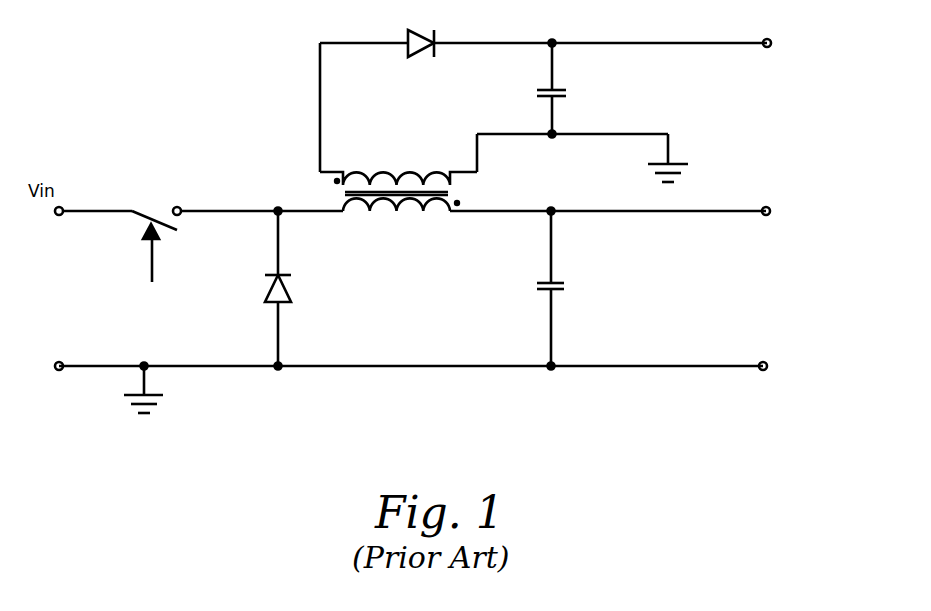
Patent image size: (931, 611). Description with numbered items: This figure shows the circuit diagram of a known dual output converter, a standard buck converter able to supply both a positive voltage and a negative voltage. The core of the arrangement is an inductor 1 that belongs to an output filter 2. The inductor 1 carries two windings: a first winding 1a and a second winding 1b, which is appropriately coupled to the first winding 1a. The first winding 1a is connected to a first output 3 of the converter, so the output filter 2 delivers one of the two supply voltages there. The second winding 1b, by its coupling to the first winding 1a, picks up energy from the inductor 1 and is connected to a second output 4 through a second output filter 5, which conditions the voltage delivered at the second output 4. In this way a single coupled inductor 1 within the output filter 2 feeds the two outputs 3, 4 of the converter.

The inductor 1 is at (402, 208).
The first winding 1a is at (383, 200).
The second winding 1b is at (390, 184).
The output filter 2 is at (449, 332).
The first output 3 is at (762, 209).
The second output 4 is at (763, 41).
The second output filter 5 is at (360, 105).